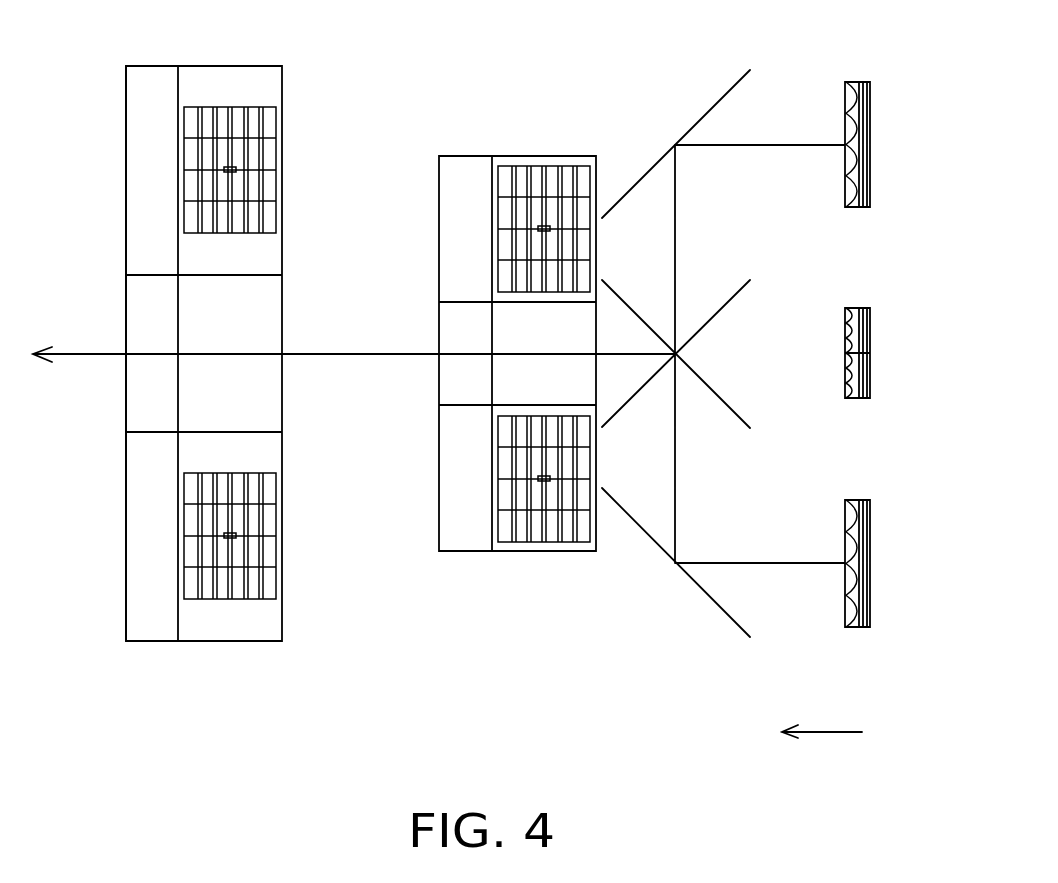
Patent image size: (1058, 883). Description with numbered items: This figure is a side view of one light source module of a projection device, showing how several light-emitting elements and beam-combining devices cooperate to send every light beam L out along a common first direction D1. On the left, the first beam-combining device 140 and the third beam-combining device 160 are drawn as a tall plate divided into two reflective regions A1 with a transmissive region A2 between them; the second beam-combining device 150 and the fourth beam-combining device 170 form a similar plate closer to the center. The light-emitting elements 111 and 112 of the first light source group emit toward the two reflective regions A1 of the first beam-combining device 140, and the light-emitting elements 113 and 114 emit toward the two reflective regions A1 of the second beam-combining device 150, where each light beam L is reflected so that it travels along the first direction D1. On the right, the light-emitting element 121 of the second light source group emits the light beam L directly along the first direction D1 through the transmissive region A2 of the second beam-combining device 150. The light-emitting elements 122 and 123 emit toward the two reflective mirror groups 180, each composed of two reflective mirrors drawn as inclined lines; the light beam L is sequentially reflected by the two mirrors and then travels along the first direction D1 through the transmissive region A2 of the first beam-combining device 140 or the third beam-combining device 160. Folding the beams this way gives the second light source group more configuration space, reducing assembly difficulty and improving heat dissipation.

The light-emitting element 111 is at (240, 117).
The light-emitting element 112 is at (240, 590).
The light-emitting element 113 is at (551, 175).
The light-emitting element 114 is at (550, 532).
The light-emitting element 121 is at (863, 378).
The light-emitting element 122 is at (862, 569).
The light-emitting element 123 is at (863, 141).
The first beam-combining device 140 is at (282, 307).
The second beam-combining device 150 is at (439, 377).
The third beam-combining device 160 is at (143, 200).
The fourth beam-combining device 170 is at (459, 173).
The reflective mirror group 180 is at (633, 190).
The reflective region A1 is at (143, 118).
The transmissive region A2 is at (143, 312).
The light beam L is at (80, 357).
The first direction D1 is at (822, 749).